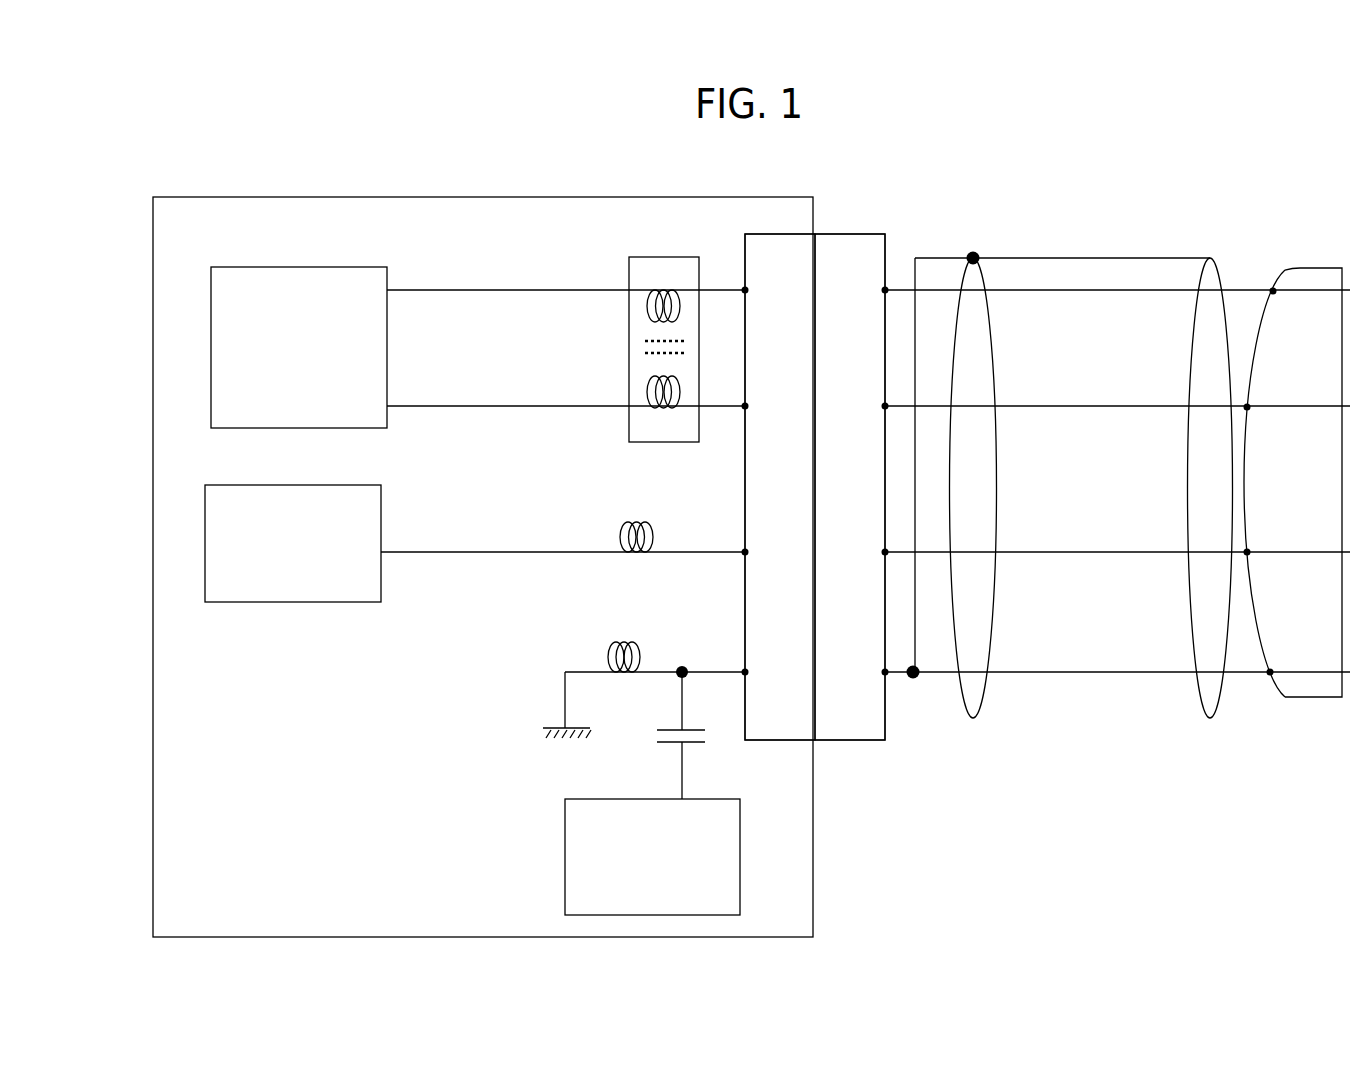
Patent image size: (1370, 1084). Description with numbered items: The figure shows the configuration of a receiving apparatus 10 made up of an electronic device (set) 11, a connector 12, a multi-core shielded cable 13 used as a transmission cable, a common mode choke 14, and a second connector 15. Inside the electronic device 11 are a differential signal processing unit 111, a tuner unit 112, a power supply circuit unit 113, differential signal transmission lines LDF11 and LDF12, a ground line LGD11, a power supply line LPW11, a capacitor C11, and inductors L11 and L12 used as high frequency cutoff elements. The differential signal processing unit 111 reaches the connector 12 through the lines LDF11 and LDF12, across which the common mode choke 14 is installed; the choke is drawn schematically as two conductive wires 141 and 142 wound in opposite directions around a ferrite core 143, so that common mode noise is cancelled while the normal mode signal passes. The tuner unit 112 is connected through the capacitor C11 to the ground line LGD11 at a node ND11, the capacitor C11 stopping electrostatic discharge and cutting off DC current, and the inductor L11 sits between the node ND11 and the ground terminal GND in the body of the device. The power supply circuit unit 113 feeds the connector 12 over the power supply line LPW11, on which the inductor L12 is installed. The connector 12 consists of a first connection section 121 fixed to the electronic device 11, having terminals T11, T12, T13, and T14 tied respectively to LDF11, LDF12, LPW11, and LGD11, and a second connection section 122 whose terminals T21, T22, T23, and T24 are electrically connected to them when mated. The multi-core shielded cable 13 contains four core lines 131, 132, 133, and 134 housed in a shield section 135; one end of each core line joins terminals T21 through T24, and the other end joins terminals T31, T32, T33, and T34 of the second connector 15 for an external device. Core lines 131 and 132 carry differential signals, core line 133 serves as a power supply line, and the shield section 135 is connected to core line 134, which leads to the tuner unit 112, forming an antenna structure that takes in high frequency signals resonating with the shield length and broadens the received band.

The receiving apparatus 10 is at (1178, 835).
The electronic device (set) 11 is at (813, 862).
The differential signal processing unit 111 is at (298, 267).
The tuner unit 112 is at (565, 861).
The power supply circuit unit 113 is at (293, 602).
The connector 12 is at (835, 234).
The first connection section 121 is at (770, 234).
The second connection section 122 is at (866, 234).
The multi-core shielded cable 13 is at (1103, 256).
The core line 131 is at (1086, 296).
The core line 132 is at (1091, 412).
The core line 133 is at (1094, 558).
The core line 134 is at (1096, 678).
The shield section 135 is at (973, 254).
The common mode choke 14 is at (628, 272).
The conductive wire 141 is at (646, 308).
The conductive wire 142 is at (646, 390).
The ferrite core 143 is at (645, 347).
The second connector 15 is at (1312, 700).
The terminal T11 is at (747, 290).
The terminal T12 is at (747, 406).
The terminal T13 is at (747, 552).
The terminal T14 is at (747, 672).
The terminal T21 is at (883, 290).
The terminal T22 is at (883, 406).
The terminal T23 is at (883, 552).
The terminal T24 is at (883, 672).
The terminal T31 is at (1276, 294).
The terminal T32 is at (1249, 405).
The terminal T33 is at (1249, 550).
The terminal T34 is at (1272, 670).
The differential signal transmission line LDF11 is at (466, 290).
The differential signal transmission line LDF12 is at (466, 406).
The power supply line LPW11 is at (478, 552).
The ground line in the electronic device LGD11 is at (708, 672).
The inductor L11 is at (623, 641).
The inductor L12 is at (634, 521).
The capacitor C11 is at (696, 745).
The node ND11 is at (678, 677).
The ground terminal GND is at (565, 722).